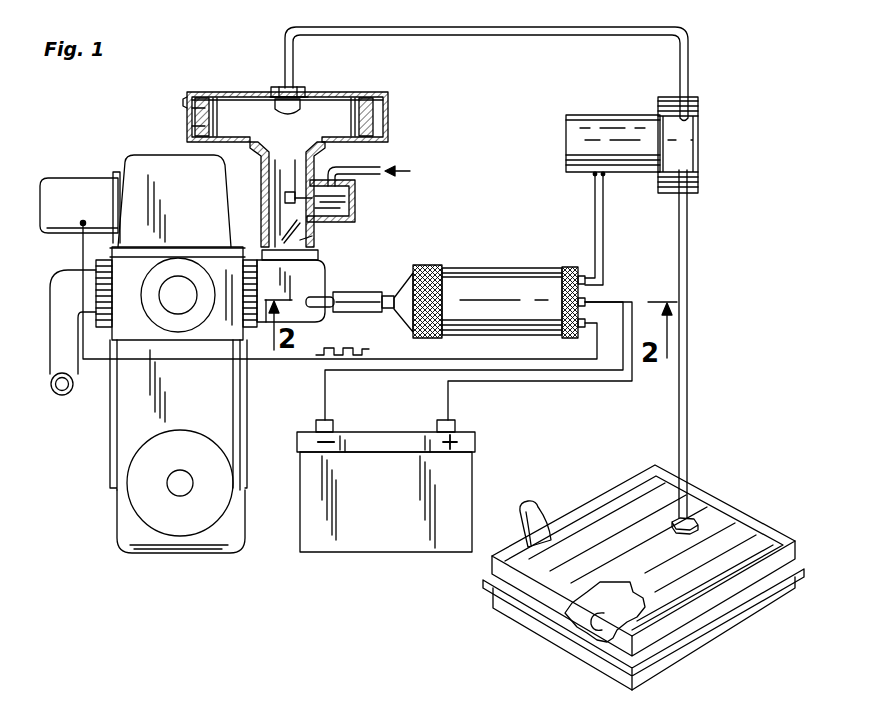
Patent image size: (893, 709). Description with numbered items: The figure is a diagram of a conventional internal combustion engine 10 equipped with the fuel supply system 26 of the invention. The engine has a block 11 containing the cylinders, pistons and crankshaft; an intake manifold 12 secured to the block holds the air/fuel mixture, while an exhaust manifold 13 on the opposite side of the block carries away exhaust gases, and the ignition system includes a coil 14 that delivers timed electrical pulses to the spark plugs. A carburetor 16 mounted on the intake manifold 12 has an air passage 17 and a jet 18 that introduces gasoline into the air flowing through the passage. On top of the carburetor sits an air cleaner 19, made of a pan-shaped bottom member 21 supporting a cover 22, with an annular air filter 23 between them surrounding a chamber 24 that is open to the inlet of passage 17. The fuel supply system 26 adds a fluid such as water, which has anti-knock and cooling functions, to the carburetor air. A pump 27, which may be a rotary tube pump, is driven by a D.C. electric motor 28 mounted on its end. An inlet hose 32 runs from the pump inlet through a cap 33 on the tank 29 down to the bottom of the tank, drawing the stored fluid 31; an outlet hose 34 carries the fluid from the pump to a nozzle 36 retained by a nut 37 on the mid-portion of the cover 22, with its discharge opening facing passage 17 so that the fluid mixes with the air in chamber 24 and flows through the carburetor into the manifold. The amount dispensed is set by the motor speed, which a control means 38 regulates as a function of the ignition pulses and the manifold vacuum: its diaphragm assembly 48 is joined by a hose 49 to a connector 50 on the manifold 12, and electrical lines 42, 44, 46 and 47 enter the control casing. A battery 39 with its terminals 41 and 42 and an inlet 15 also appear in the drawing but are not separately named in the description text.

The internal combustion engine 10 is at (98, 510).
The block 11 is at (236, 392).
The intake manifold 12 is at (300, 314).
The exhaust manifold 13 is at (66, 396).
The coil 14 is at (78, 186).
The fuel inlet 15 is at (376, 170).
The carburetor 16 is at (312, 237).
The passage 17 is at (290, 177).
The nozzle or jet 18 is at (283, 199).
The air cleaner 19 is at (201, 95).
The bottom member 21 is at (189, 122).
The cover 22 is at (233, 92).
The annular air filter 23 is at (206, 120).
The chamber 24 is at (311, 118).
The fuel supply system 26 is at (731, 47).
The pump 27 is at (699, 141).
The D.C. electric motor 28 is at (617, 125).
The tank or container 29 is at (526, 592).
The fluid 31 is at (600, 638).
The inlet hose 32 is at (690, 274).
The cap 33 is at (712, 507).
The outlet hose 34 is at (456, 29).
The nozzle 36 is at (270, 101).
The nut 37 is at (295, 88).
The control means 38 is at (483, 281).
The battery 39 is at (391, 485).
The negative battery terminal 41 is at (327, 400).
The electrical line 42 is at (450, 400).
The electrical line 44 is at (499, 359).
The electrical line 46 is at (593, 189).
The electrical line 47 is at (604, 206).
The diaphragm assembly 48 is at (409, 282).
The hose 49 is at (366, 294).
The connector 50 is at (315, 296).